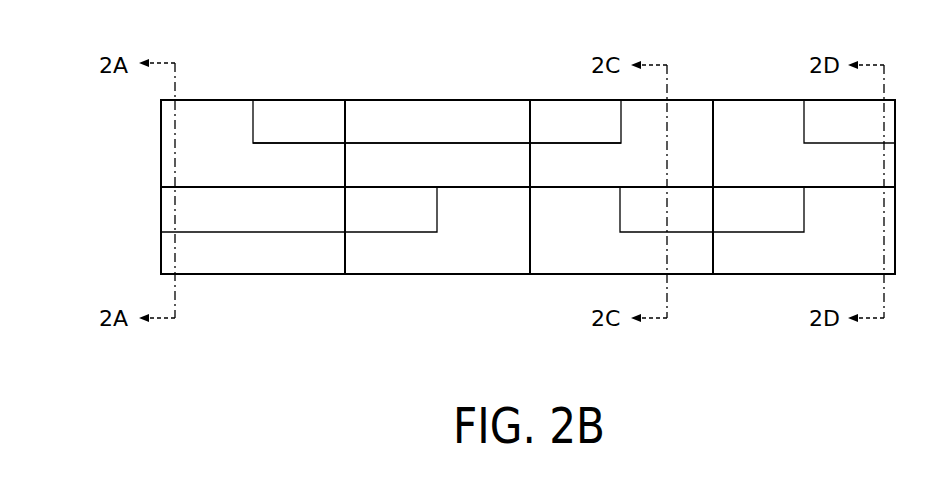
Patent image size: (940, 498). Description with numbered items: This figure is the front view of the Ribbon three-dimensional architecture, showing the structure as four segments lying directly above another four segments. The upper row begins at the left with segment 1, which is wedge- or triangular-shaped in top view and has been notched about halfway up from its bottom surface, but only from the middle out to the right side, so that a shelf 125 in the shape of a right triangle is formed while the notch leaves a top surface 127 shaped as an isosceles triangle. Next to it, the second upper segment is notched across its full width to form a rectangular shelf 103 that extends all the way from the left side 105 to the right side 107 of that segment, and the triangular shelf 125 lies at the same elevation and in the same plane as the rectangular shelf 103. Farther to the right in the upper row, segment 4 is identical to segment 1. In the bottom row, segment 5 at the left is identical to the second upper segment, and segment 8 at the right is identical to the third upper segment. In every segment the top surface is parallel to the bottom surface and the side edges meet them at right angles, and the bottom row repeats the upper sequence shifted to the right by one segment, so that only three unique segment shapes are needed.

The segment 1 is at (108, 136).
The segment 4 is at (755, 82).
The segment 5 is at (115, 244).
The segment 8 is at (773, 294).
The shelf 103 is at (462, 142).
The left side 105 is at (345, 172).
The right side 107 is at (530, 167).
The shelf 125 is at (302, 142).
The top surface 127 is at (218, 99).